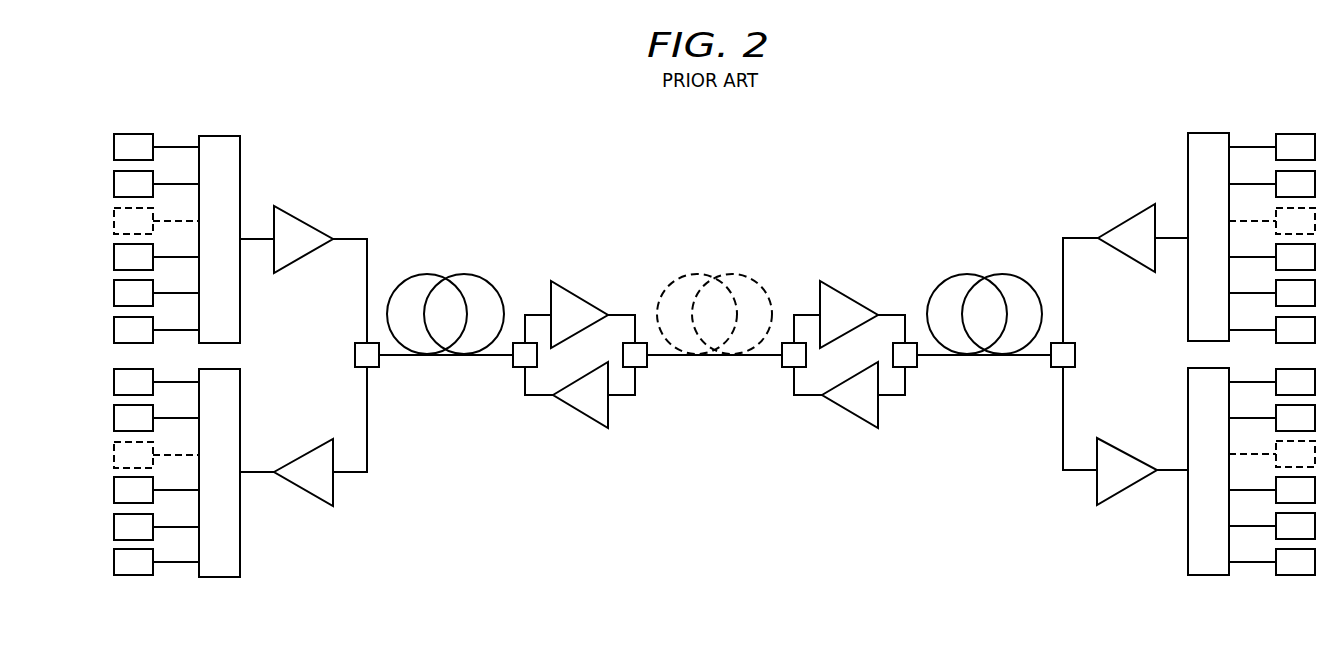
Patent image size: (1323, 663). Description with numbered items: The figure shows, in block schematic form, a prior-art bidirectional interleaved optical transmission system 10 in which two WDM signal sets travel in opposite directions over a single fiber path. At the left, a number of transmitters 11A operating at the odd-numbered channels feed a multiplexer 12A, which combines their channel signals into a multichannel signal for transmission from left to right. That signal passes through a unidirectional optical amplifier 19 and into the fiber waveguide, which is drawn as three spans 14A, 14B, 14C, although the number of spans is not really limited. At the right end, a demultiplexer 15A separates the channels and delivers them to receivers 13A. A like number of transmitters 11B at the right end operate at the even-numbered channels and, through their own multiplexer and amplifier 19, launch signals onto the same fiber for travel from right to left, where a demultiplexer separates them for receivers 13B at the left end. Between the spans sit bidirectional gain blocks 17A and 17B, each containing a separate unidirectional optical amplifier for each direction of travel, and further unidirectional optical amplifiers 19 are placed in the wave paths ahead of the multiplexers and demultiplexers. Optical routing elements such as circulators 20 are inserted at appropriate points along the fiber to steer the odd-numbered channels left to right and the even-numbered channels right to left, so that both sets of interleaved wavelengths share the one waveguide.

The optical bidirectional interleaved optical transmission system 10 is at (703, 136).
The transmitters 11A is at (135, 135).
The transmitters 11B is at (1297, 133).
The multiplexer 12A is at (219, 136).
The receivers 13A is at (1295, 576).
The receivers 13B is at (133, 576).
The fiber span 14A is at (446, 275).
The fiber span 14B is at (716, 273).
The fiber span 14C is at (986, 273).
The demultiplexer 15A is at (1205, 576).
The bidirectional gain block 17A is at (522, 437).
The bidirectional gain block 17B is at (792, 437).
The unidirectional optical amplifier 19 is at (309, 223).
The circulators 20 is at (355, 353).